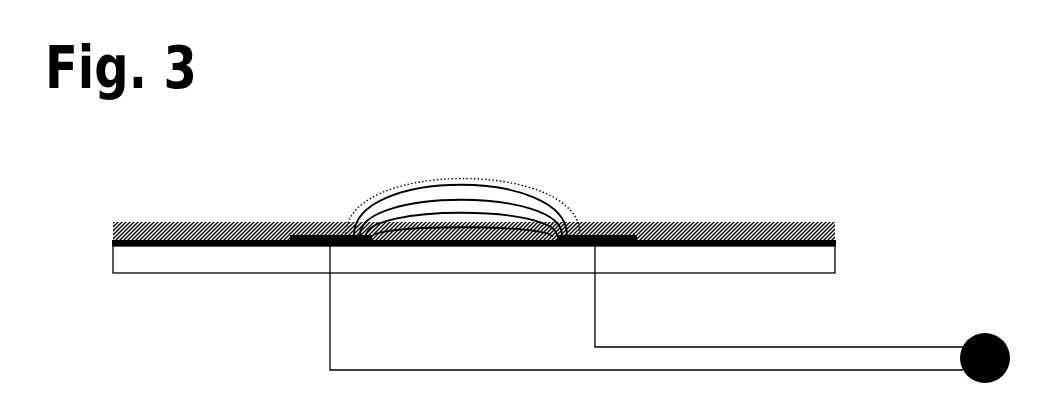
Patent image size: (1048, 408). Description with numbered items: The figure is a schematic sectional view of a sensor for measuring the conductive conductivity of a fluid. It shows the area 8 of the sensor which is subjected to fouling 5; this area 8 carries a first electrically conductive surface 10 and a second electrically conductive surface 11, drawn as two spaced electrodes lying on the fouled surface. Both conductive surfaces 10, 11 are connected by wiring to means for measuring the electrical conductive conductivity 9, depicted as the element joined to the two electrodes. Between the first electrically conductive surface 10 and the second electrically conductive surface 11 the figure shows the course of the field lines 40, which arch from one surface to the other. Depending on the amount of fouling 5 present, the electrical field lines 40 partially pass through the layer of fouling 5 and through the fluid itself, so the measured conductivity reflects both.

The fouling 5 is at (795, 231).
The area of the sensor 8 is at (777, 246).
The means for measuring the electrical conductive conductivity 9 is at (980, 333).
The first electrically conductive surface 10 is at (620, 235).
The second electrically conductive surface 11 is at (322, 235).
The field lines 40 is at (460, 178).